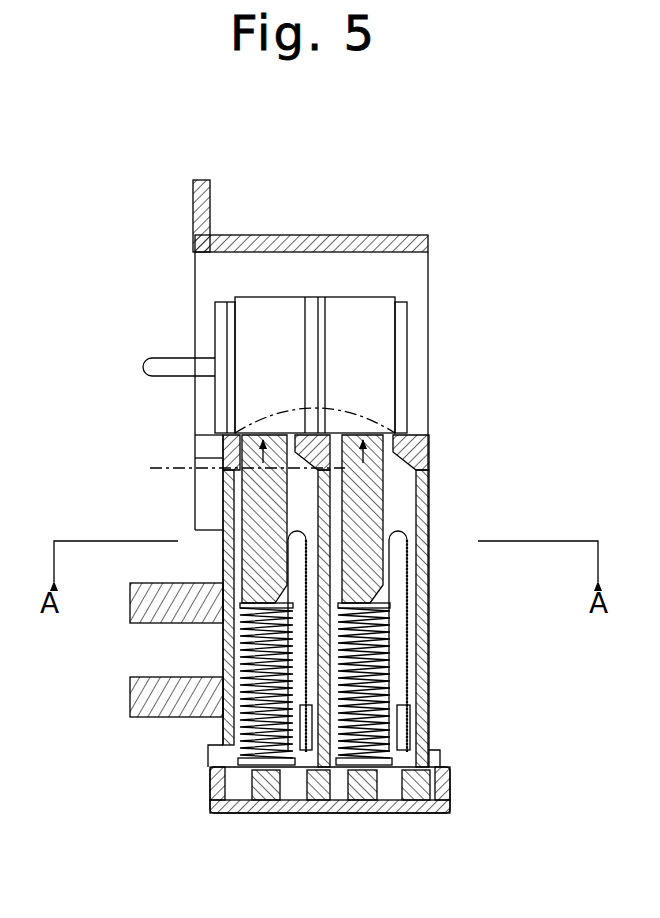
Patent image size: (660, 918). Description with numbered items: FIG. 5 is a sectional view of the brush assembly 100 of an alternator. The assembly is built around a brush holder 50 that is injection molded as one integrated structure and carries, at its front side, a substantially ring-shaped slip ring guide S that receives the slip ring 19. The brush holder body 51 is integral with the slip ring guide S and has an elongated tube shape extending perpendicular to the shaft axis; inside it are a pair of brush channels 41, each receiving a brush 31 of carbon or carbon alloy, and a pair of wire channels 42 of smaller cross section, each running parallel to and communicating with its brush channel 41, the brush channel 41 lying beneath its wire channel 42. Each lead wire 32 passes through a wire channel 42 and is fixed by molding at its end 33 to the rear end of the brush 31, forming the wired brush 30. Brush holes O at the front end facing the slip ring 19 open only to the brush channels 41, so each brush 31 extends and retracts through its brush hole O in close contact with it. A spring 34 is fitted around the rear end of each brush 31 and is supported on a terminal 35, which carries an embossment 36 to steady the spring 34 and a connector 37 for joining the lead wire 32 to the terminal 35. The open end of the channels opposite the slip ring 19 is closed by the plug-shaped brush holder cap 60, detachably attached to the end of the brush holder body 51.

The brush assembly 100 is at (495, 217).
The slip ring guide S is at (315, 240).
The slip ring 19 is at (375, 356).
The brush hole O is at (387, 418).
The brush channel 41 is at (238, 553).
The brush holder body 51 is at (425, 637).
The wire channel 42 is at (305, 483).
The brush 31 is at (232, 498).
The lead wire 32 is at (405, 572).
The lead wire end 33 is at (385, 600).
The spring 34 is at (383, 689).
The connector 37 is at (410, 720).
The brush holder cap 60 is at (450, 796).
The embossment 36 is at (272, 795).
The terminal 35 is at (386, 798).
The brush holder 50 is at (442, 481).
The wired brush 30 is at (487, 483).